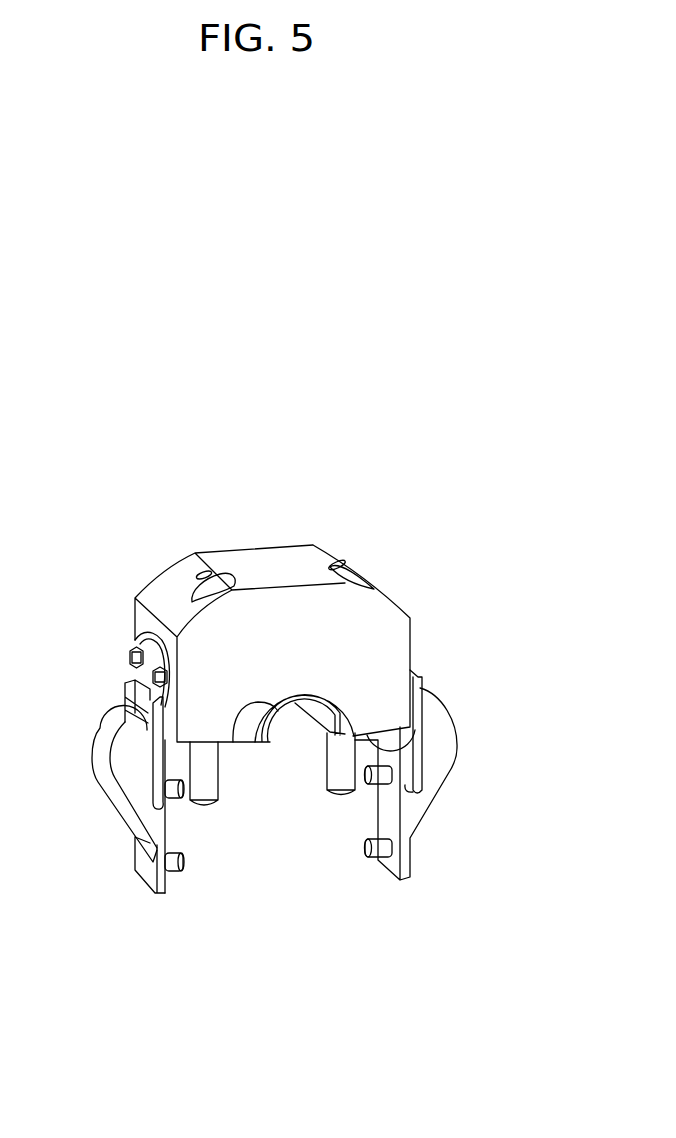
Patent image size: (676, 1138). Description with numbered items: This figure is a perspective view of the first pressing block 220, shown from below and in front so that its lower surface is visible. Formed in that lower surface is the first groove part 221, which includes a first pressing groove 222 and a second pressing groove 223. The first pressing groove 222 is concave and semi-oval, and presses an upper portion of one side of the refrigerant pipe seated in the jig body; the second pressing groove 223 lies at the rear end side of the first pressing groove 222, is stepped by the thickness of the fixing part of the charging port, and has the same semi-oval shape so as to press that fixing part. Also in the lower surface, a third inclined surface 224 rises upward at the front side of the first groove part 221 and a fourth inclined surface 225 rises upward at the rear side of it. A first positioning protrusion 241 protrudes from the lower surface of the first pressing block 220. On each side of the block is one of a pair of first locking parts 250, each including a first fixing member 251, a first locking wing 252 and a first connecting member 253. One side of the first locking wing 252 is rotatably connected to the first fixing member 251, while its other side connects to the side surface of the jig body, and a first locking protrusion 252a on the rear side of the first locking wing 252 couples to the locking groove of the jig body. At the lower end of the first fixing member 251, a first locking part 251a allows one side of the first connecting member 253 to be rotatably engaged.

The first pressing block 220 is at (371, 524).
The first groove part 221 is at (302, 873).
The first pressing groove 222 is at (295, 703).
The second pressing groove 223 is at (242, 745).
The third inclined surface 224 is at (205, 744).
The fourth inclined surface 225 is at (413, 735).
The first positioning protrusion 241 is at (340, 794).
The first locking part 250 is at (474, 732).
The first fixing member 251 is at (135, 641).
The first locking part 251a is at (130, 695).
The first locking wing 252 is at (108, 790).
The first locking protrusion 252a is at (175, 880).
The first connecting member 253 is at (125, 707).